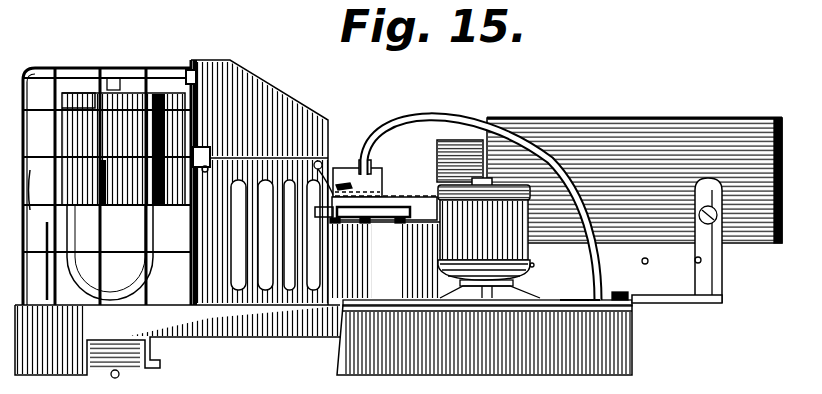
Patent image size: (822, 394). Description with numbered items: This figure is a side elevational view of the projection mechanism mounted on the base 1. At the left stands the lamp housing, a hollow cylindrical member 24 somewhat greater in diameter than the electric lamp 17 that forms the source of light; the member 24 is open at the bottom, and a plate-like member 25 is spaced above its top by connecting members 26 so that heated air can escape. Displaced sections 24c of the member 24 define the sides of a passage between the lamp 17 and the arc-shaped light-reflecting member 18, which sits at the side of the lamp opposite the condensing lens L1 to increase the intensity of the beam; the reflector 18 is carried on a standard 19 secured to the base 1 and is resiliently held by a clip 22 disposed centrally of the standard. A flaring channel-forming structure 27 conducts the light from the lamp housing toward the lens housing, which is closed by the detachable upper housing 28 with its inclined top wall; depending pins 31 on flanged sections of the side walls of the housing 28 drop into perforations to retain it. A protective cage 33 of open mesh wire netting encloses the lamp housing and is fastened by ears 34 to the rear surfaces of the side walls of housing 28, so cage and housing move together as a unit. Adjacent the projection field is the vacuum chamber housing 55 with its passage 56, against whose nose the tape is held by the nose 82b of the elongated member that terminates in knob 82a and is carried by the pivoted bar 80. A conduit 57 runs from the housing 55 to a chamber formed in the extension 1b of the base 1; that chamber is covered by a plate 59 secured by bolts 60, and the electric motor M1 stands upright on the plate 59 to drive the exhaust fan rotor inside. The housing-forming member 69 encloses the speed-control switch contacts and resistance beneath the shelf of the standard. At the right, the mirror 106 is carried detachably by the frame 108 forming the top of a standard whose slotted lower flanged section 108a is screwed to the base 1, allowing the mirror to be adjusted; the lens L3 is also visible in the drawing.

The base 1 is at (262, 320).
The extension of the base 1b is at (625, 352).
The source of light 17 is at (156, 275).
The light-reflecting member 18 is at (72, 128).
The standard 19 is at (45, 284).
The resilient clip 22 is at (27, 172).
The hollow cylindrical member 24 is at (52, 104).
The displaced sections of the cylindrical member 24c is at (123, 196).
The plate-like member 25 is at (166, 67).
The connecting members 26 is at (116, 68).
The passage or channel-forming structure 27 is at (175, 183).
The upper housing 28 is at (273, 102).
The depending pin 31 is at (208, 168).
The cage 33 is at (56, 104).
The ears 34 is at (196, 76).
The housing 55 is at (386, 174).
The passage 56 is at (371, 163).
The conduit 57 is at (436, 116).
The plate 59 is at (563, 298).
The bolts 60 is at (628, 280).
The housing-forming member 69 is at (385, 260).
The bar 80 is at (401, 200).
The knob 82a is at (322, 162).
The nose 82b is at (341, 182).
The mirror 106 is at (722, 130).
The frame 108 is at (645, 135).
The lower flanged section 108a is at (660, 290).
The condensing lens L1 is at (247, 244).
The lamp L3 is at (455, 152).
The electric motor M1 is at (465, 230).